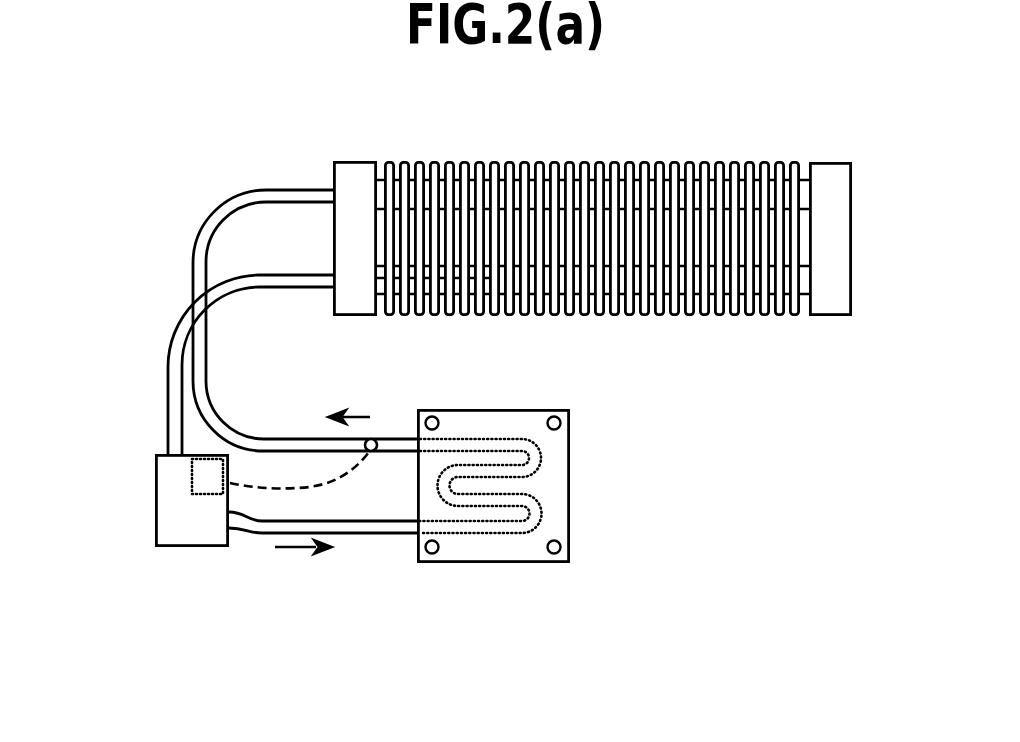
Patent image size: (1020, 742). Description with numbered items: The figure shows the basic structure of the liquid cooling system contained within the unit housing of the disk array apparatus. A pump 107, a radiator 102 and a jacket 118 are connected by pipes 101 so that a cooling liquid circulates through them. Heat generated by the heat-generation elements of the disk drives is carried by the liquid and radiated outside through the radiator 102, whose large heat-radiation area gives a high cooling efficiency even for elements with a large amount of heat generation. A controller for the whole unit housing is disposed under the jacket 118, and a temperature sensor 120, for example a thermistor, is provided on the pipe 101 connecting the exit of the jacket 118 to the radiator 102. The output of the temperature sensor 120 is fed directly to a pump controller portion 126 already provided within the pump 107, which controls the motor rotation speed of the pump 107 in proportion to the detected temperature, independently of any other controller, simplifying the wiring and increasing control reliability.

The pipe 101 is at (212, 303).
The radiator 102 is at (837, 162).
The pump 107 is at (193, 529).
The jacket 118 is at (553, 482).
The temperature sensor 120 is at (368, 452).
The pump controller portion 126 is at (205, 474).